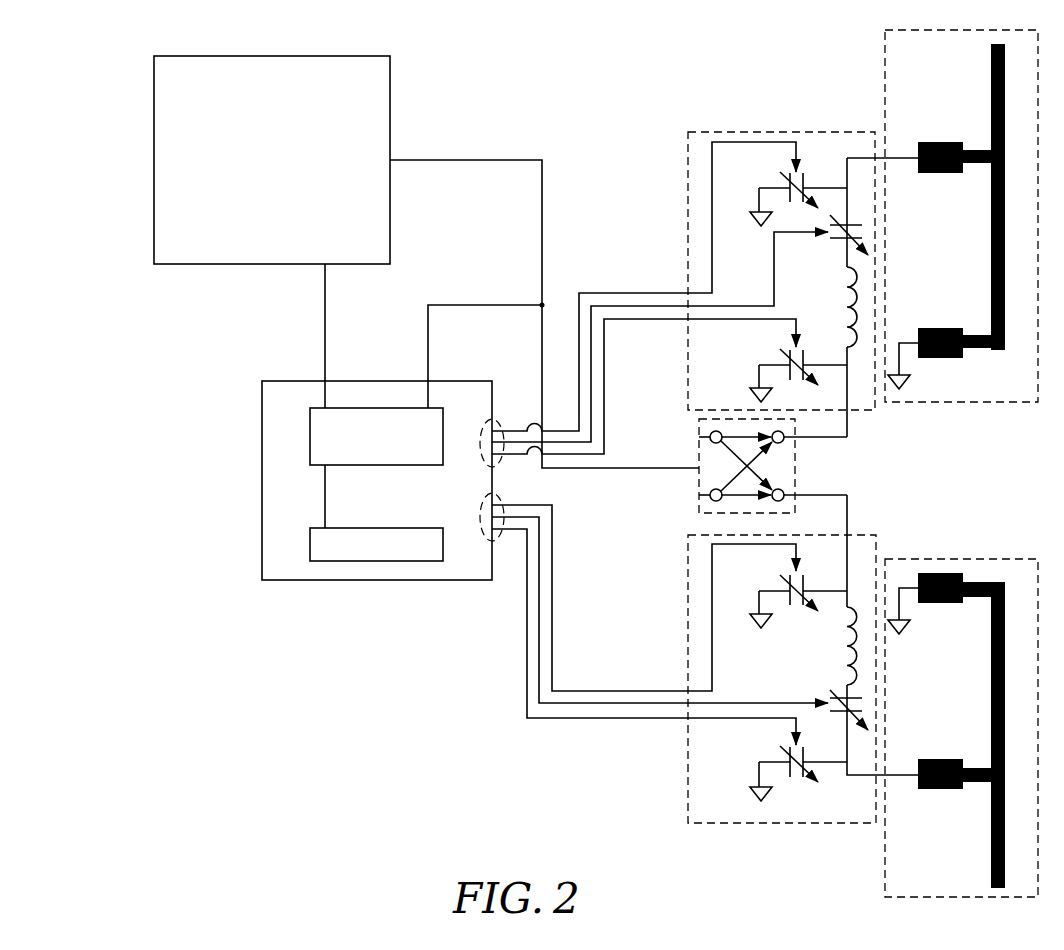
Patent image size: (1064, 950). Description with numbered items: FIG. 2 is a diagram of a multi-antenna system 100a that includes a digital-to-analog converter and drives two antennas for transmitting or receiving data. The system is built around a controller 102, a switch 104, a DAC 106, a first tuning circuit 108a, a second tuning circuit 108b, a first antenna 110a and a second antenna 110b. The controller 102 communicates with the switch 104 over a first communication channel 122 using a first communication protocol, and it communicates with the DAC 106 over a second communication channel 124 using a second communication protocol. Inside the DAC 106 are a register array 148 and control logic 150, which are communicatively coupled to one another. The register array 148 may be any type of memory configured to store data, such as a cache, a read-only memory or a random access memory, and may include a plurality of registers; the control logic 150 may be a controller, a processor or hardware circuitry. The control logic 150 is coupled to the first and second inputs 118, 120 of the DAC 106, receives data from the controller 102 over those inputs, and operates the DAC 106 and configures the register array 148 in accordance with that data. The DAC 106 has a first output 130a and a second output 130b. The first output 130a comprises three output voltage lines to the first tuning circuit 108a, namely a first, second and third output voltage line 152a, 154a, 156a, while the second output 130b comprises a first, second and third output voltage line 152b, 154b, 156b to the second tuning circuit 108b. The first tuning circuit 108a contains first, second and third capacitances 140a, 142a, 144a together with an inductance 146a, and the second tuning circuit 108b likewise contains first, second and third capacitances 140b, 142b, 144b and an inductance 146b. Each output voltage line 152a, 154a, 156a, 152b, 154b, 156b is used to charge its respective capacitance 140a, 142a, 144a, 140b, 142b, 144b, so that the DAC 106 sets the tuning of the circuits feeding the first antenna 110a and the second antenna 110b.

The multi-antenna system 100a is at (133, 45).
The controller 102 is at (154, 162).
The switch 104 is at (795, 468).
The DAC 106 is at (351, 480).
The first tuning circuit 108a is at (803, 268).
The second tuning circuit 108b is at (803, 679).
The first antenna 110a is at (960, 403).
The second antenna 110b is at (960, 557).
The first input 118 is at (428, 380).
The second input 120 is at (325, 380).
The first communication channel 122 is at (451, 160).
The second communication channel 124 is at (325, 292).
The first output 130a is at (498, 425).
The second output 130b is at (485, 510).
The first capacitance 140a is at (803, 183).
The first capacitance 140b is at (803, 760).
The second capacitance 142a is at (846, 242).
The second capacitance 142b is at (847, 695).
The third capacitance 144a is at (803, 360).
The third capacitance 144b is at (803, 586).
The inductance 146a is at (852, 293).
The inductance 146b is at (850, 645).
The register array 148 is at (310, 545).
The control logic 150 is at (310, 437).
The first output voltage line 152a is at (592, 292).
The first output voltage line 152b is at (552, 607).
The second output voltage line 154a is at (650, 306).
The second output voltage line 154b is at (643, 703).
The third output voltage line 156a is at (652, 322).
The third output voltage line 156b is at (628, 720).